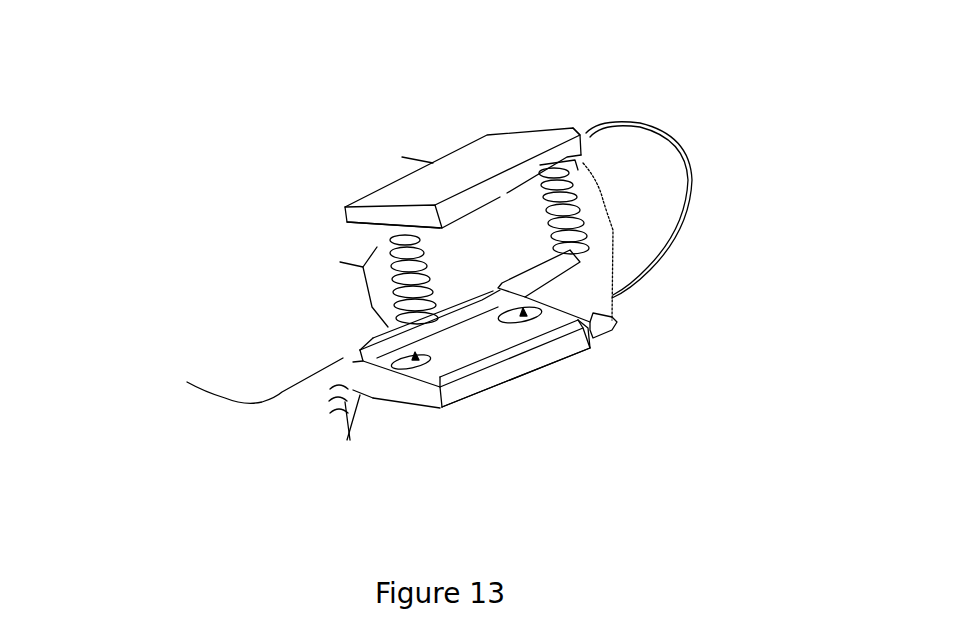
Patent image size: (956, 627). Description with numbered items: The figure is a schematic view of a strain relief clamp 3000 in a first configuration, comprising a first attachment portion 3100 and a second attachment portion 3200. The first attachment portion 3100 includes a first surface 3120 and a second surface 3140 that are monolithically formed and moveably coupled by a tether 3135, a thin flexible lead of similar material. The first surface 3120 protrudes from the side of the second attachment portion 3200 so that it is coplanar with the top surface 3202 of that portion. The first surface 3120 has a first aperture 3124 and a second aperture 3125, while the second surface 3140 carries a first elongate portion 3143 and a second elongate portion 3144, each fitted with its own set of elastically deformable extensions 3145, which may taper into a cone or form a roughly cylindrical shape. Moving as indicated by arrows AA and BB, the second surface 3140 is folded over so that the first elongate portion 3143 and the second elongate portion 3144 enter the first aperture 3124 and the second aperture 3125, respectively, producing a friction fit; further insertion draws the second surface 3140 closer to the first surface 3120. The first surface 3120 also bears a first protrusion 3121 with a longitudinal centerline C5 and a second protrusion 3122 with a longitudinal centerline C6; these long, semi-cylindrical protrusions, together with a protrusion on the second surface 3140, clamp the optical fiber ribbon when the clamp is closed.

The strain relief clamp 3000 is at (390, 71).
The second surface 3140 is at (500, 198).
The first elongate portion 3143 is at (345, 222).
The second elongate portion 3144 is at (563, 162).
The elastically deformable extensions 3145 is at (363, 265).
The tether 3135 is at (686, 230).
The top surface 3202 is at (235, 283).
The second protrusion 3122 is at (367, 340).
The first surface 3120 is at (475, 347).
The first protrusion 3121 is at (467, 373).
The second aperture 3125 is at (593, 338).
The first aperture 3124 is at (392, 362).
The second attachment portion 3200 is at (194, 400).
The first attachment portion 3100 is at (573, 363).
The arrow AA is at (418, 355).
The arrow BB is at (548, 281).
The first longitudinal centerline C5 is at (518, 347).
The second longitudinal centerline C6 is at (350, 360).